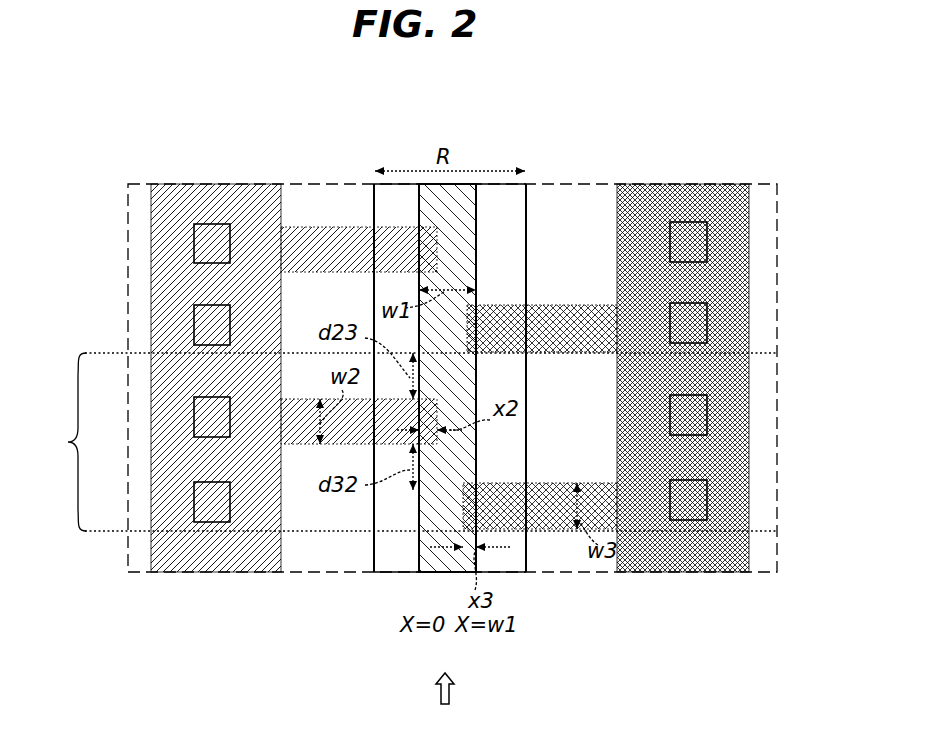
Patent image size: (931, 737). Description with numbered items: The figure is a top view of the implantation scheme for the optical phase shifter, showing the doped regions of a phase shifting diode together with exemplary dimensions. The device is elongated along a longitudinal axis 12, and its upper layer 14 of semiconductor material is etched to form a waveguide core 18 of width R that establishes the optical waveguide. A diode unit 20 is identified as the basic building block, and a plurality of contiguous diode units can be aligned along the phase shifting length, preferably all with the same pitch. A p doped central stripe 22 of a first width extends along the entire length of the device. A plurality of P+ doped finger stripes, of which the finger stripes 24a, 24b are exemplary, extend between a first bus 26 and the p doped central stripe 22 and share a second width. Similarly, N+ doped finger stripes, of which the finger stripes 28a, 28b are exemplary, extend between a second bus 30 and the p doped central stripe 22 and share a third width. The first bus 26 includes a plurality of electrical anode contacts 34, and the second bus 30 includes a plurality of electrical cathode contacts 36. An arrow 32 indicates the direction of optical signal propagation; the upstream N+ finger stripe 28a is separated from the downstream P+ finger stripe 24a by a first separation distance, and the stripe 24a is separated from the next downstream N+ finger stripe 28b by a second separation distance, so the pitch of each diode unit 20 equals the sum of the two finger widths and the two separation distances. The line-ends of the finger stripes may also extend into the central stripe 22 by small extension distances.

The longitudinal axis 12 is at (445, 134).
The upper layer 14 is at (770, 490).
The waveguide core 18 is at (374, 196).
The diode unit 20 is at (404, 442).
The p doped central stripe 22 is at (526, 196).
The P+ doped finger stripe 24a is at (298, 435).
The P+ doped finger stripe 24b is at (298, 230).
The first bus 26 is at (168, 282).
The N+ doped finger stripe 28a is at (546, 522).
The N+ doped finger stripe 28b is at (585, 300).
The second bus 30 is at (732, 352).
The arrow 32 is at (452, 690).
The electrical anode contacts 34 is at (212, 240).
The electrical cathode contacts 36 is at (735, 233).